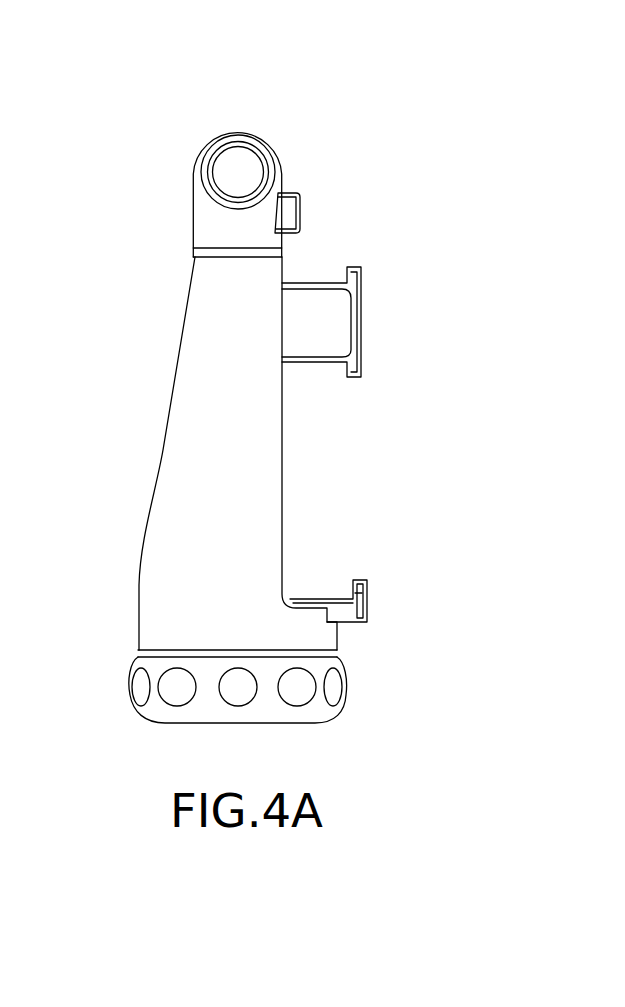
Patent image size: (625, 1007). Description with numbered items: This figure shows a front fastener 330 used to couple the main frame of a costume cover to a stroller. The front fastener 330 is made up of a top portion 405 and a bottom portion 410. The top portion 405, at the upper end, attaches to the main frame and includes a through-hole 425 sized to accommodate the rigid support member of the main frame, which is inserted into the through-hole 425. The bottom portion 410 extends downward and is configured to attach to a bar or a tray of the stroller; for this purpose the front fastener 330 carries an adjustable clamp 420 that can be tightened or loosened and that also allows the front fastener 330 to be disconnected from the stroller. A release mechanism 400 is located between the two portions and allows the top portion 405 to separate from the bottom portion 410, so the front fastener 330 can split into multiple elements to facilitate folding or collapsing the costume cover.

The front fastener 330 is at (306, 91).
The release mechanism 400 is at (300, 213).
The top portion 405 is at (193, 217).
The bottom portion 410 is at (195, 423).
The adjustable clamp 420 is at (392, 256).
The through-hole 425 is at (230, 169).